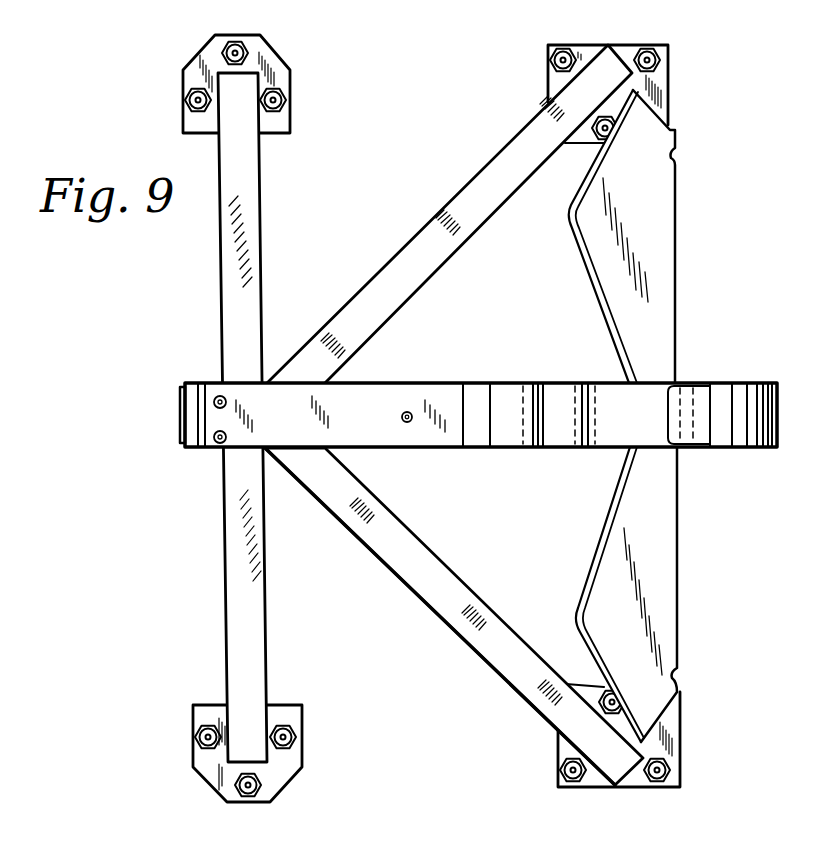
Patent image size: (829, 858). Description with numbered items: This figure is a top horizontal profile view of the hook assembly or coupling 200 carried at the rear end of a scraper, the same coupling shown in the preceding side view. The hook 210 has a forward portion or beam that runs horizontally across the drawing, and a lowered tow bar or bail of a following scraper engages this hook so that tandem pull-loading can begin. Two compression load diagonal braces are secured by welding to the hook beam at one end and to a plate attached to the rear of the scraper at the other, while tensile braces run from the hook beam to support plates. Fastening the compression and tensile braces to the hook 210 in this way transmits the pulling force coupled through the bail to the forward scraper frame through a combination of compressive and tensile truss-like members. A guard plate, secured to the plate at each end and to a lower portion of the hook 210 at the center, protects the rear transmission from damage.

The hook assembly 200 is at (190, 351).
The hook 210 is at (728, 383).